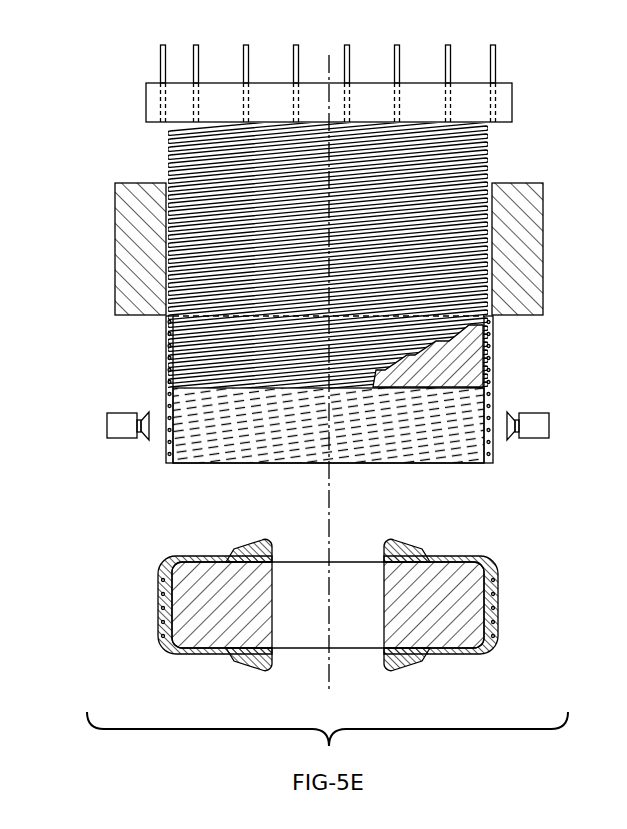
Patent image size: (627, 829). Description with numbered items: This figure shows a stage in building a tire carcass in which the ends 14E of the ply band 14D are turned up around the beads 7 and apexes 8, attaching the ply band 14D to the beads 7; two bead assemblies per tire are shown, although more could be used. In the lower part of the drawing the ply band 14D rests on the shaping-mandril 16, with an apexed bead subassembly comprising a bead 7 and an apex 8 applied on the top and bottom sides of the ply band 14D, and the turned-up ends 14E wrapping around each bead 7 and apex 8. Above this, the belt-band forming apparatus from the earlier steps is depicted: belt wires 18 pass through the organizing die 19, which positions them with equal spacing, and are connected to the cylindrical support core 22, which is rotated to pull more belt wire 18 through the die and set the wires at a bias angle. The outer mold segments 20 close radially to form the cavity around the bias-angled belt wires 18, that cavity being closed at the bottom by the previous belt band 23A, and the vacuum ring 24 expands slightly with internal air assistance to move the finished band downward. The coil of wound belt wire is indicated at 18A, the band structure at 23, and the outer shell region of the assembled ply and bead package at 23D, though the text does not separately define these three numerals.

The bead 7 is at (275, 663).
The apex 8 is at (250, 552).
The ply band 14D is at (447, 653).
The ends of ply band 14E is at (408, 545).
The shaping-mandril 16 is at (263, 598).
The belt wires 18 is at (163, 57).
The coil winding 18A is at (228, 182).
The organizing die 19 is at (505, 95).
The outer mold segments 20 is at (137, 233).
The cylindrical support core 22 is at (463, 375).
The casing 23 is at (166, 352).
The belt band 23A is at (166, 400).
The shell 23D is at (497, 600).
The vacuum ring 24 is at (122, 435).